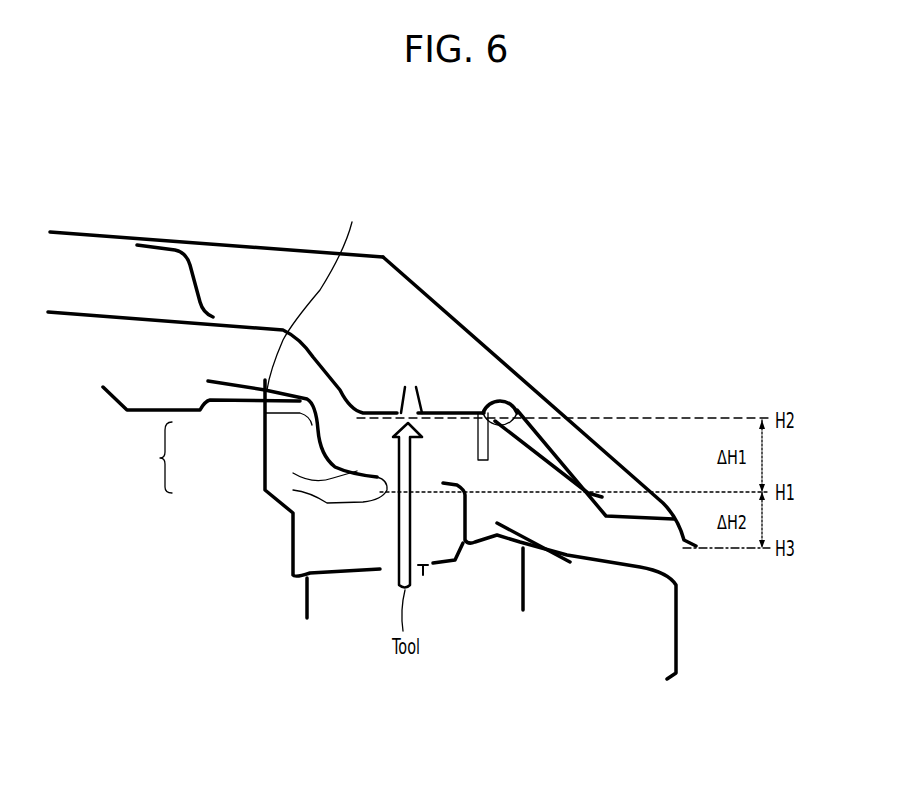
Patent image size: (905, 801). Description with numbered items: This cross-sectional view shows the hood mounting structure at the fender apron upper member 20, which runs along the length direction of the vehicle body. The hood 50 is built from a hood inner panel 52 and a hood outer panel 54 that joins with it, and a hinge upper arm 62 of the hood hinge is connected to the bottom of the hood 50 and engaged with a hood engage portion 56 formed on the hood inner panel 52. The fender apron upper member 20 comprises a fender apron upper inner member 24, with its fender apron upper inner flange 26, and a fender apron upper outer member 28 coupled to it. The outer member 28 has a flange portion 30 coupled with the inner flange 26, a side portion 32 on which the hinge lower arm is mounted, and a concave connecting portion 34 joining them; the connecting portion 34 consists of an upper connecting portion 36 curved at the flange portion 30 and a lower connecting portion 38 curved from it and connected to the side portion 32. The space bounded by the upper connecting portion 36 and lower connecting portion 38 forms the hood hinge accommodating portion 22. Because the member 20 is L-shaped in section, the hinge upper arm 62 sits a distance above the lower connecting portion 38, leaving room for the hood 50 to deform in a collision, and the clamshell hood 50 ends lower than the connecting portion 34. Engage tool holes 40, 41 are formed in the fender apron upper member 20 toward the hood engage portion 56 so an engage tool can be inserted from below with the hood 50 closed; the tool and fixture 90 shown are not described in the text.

The fender apron upper member 20 is at (318, 650).
The hood hinge accommodating portion 22 is at (455, 443).
The fender apron upper inner member 24 is at (293, 517).
The fender apron upper inner flange 26 is at (316, 294).
The fender apron upper outer member 28 is at (368, 600).
The flange portion 30 is at (242, 385).
The side portion 32 is at (469, 545).
The connecting portion 34 is at (149, 457).
The upper connecting portion 36 is at (265, 413).
The lower connecting portion 38 is at (293, 473).
The engage tool hole 40 is at (293, 490).
The engage tool hole 41 is at (425, 577).
The hood 50 is at (168, 204).
The hood inner panel 52 is at (283, 330).
The hood outer panel 54 is at (398, 280).
The hood engage portion 56 is at (420, 392).
The hinge upper arm 62 is at (527, 422).
The jig 90 is at (682, 640).